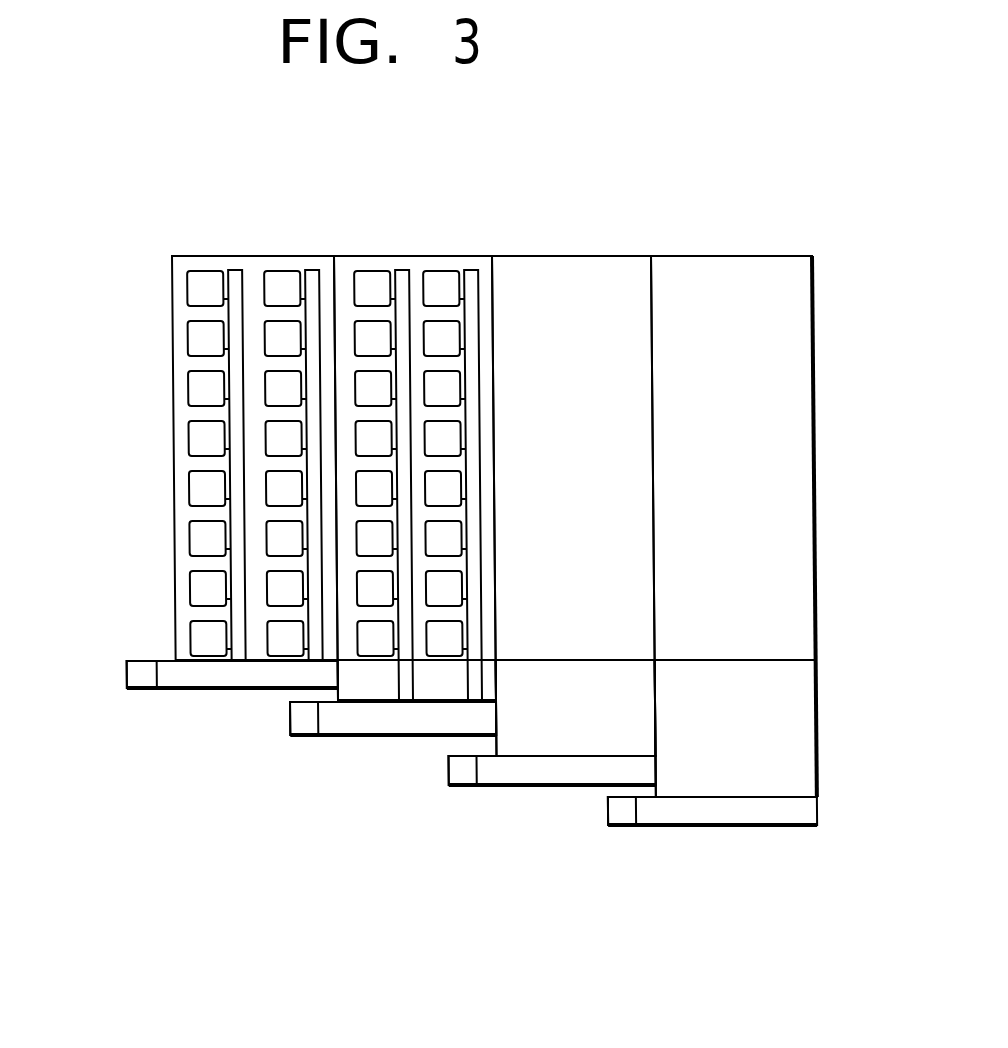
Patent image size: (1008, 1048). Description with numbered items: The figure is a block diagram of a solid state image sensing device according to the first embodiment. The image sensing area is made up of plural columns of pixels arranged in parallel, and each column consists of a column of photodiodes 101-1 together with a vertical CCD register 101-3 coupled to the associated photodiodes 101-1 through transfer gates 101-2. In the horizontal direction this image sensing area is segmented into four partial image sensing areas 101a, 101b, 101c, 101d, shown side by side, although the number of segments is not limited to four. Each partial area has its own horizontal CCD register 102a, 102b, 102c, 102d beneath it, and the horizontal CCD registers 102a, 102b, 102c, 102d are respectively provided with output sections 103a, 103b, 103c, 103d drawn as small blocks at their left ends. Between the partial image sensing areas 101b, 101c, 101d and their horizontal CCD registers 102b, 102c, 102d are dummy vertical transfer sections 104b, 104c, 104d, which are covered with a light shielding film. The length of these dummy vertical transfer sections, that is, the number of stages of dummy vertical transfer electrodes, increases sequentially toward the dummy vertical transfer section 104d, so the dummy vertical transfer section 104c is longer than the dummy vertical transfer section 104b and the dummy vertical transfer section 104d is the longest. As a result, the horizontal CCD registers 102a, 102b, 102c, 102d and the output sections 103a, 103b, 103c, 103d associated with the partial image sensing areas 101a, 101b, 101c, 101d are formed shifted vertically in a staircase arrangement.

The partial image sensing area 101a is at (189, 429).
The partial image sensing area 101b is at (420, 268).
The partial image sensing area 101c is at (570, 268).
The partial image sensing area 101d is at (744, 268).
The photodiode 101-1 is at (200, 293).
The transfer gate 101-2 is at (226, 302).
The vertical CCD register 101-3 is at (238, 462).
The horizontal CCD register 102a is at (198, 672).
The horizontal CCD register 102b is at (389, 722).
The horizontal CCD register 102c is at (547, 772).
The horizontal CCD register 102d is at (707, 817).
The output section 103a is at (139, 676).
The output section 103b is at (301, 723).
The output section 103c is at (460, 773).
The output section 103d is at (615, 813).
The dummy vertical transfer section 104b is at (492, 687).
The dummy vertical transfer section 104c is at (616, 740).
The dummy vertical transfer section 104d is at (798, 782).